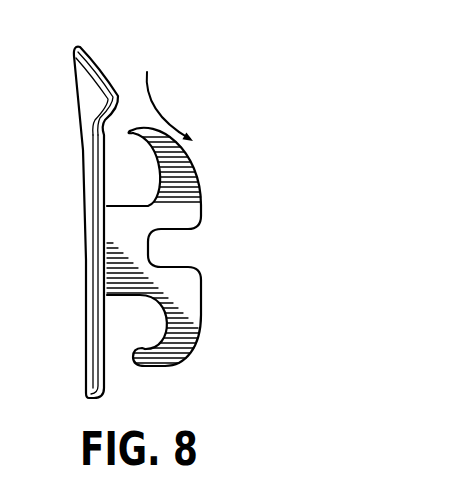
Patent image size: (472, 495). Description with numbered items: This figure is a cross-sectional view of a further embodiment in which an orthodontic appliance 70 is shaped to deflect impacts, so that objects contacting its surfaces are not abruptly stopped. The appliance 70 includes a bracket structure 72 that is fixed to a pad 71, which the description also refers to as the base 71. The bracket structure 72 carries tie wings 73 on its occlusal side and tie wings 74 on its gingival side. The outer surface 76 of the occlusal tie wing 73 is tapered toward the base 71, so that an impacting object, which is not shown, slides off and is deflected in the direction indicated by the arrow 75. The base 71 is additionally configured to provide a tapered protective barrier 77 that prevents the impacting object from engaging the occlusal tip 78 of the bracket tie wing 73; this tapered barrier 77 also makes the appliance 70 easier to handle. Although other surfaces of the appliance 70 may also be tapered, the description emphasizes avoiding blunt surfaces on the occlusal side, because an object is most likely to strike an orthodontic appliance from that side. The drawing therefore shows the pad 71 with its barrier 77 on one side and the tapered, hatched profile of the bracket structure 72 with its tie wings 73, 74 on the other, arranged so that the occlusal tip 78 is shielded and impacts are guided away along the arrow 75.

The orthodontic appliance 70 is at (207, 223).
The pad 71 is at (112, 211).
The bracket structure 72 is at (198, 306).
The tie wings 73 is at (183, 171).
The tie wings 74 is at (150, 351).
The arrow 75 is at (163, 97).
The outer surface 76 is at (189, 158).
The tapered protective barrier 77 is at (107, 73).
The occlusal tip 78 is at (130, 131).